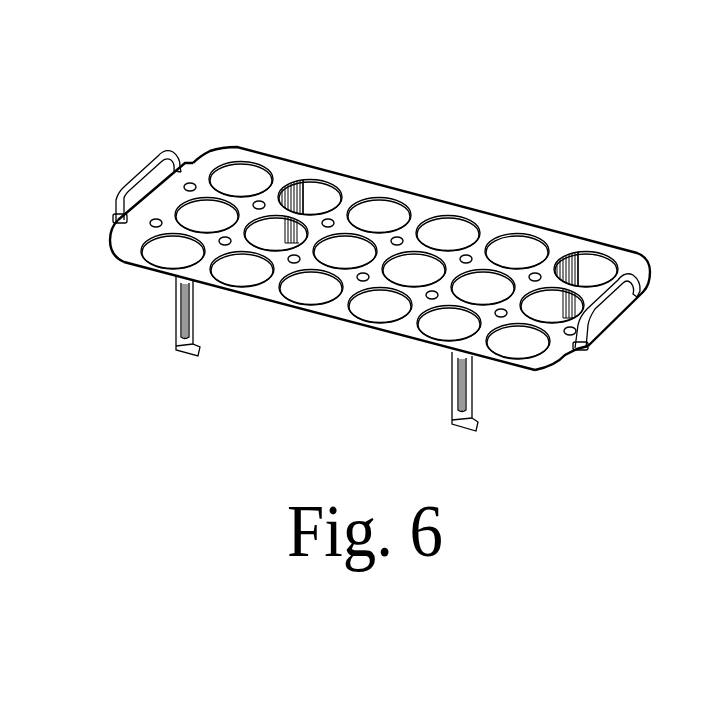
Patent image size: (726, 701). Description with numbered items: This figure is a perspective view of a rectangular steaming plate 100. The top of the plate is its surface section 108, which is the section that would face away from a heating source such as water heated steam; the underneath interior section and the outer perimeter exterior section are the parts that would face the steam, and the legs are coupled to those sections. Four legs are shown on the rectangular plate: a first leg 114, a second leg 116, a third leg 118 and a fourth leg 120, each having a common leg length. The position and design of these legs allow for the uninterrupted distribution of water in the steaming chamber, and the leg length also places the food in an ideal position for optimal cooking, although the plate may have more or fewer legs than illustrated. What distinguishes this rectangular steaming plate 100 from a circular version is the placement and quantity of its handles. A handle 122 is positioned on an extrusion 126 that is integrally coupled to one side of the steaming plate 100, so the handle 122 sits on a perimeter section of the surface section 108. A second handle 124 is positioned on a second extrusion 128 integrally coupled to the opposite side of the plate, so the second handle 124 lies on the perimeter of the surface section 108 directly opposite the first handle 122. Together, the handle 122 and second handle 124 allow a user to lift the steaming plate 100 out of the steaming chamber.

The steaming plate 100 is at (448, 42).
The surface section 108 is at (290, 168).
The first leg 114 is at (320, 193).
The second leg 116 is at (582, 270).
The third leg 118 is at (472, 380).
The fourth leg 120 is at (200, 310).
The handle 122 is at (158, 152).
The second handle 124 is at (627, 268).
The extrusion 126 is at (112, 232).
The second extrusion 128 is at (617, 320).